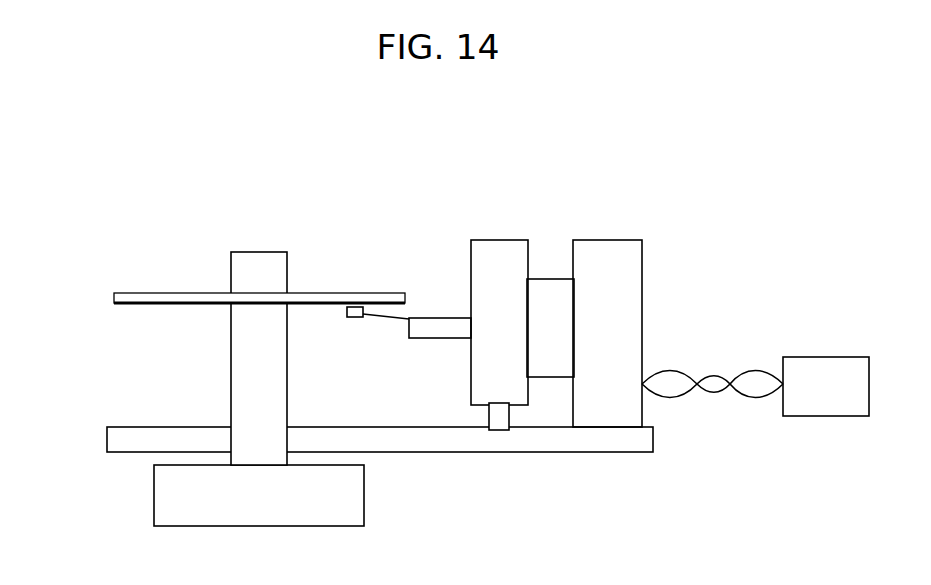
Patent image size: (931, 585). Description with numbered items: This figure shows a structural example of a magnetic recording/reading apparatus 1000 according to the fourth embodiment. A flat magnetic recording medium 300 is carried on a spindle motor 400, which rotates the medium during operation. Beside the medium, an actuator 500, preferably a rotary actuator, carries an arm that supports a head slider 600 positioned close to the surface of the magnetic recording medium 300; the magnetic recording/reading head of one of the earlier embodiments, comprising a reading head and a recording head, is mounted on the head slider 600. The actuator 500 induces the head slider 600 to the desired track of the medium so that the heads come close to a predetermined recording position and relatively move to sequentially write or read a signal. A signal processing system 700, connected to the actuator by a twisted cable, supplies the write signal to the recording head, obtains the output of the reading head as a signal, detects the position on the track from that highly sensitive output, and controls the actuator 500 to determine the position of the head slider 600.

The magnetic recording medium 300 is at (112, 304).
The spindle motor 400 is at (258, 251).
The actuator 500 is at (497, 243).
The head slider 600 is at (361, 298).
The signal processing system 700 is at (830, 357).
The magnetic recording/reading apparatus 1000 is at (706, 178).